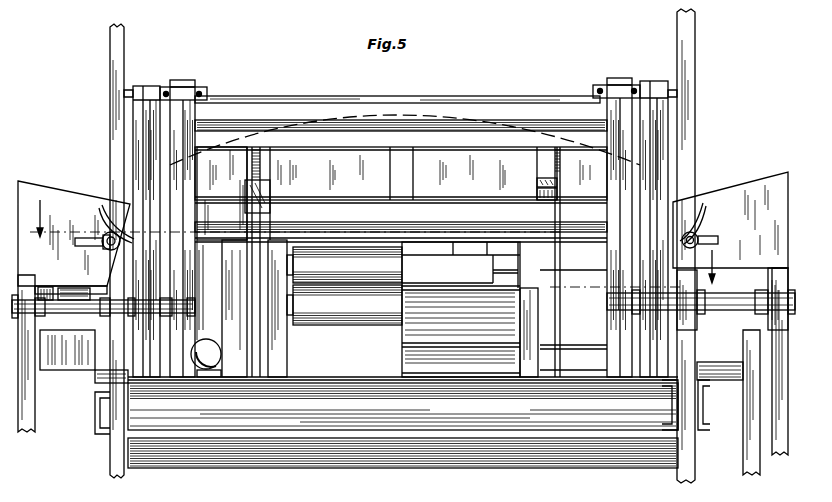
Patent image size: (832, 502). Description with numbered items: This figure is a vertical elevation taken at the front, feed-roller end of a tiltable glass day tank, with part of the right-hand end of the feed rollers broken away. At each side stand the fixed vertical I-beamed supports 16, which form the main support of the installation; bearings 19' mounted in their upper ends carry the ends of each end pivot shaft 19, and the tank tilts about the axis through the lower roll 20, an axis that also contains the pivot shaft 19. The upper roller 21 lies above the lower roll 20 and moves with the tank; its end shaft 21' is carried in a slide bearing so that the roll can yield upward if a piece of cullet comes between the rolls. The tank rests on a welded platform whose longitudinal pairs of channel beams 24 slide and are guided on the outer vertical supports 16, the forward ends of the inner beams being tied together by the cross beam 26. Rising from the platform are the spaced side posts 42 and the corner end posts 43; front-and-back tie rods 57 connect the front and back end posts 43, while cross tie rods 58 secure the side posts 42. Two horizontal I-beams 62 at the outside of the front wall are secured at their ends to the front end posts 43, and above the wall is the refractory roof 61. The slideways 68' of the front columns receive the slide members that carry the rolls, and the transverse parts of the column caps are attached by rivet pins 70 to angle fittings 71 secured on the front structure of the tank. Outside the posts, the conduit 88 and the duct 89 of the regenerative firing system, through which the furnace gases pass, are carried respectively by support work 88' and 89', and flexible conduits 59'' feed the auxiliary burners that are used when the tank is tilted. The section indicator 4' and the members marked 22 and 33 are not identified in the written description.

The section line indicator 4' is at (376, 238).
The vertical fixed I-beamed supports 16 is at (35, 423).
The end pivot shaft 19 is at (701, 292).
The bearings 19' is at (71, 311).
The lower roll 20 is at (344, 305).
The upper roller 21 is at (344, 265).
The end shaft of top roll 21' is at (103, 322).
The base beam 22 is at (355, 465).
The channel beams 24 is at (128, 408).
The cross beam 26 is at (367, 423).
The post 33 is at (112, 52).
The posts 42 is at (148, 86).
The end posts 43 is at (188, 80).
The tie rods 57 is at (208, 90).
The cross tie rods 58 is at (283, 100).
The flexible conduits 59'' is at (175, 262).
The refractory roof 61 is at (77, 247).
The horizontally extending I-beams 62 is at (480, 128).
The slideways 68' is at (532, 177).
The rivet pins 70 is at (536, 193).
The angle fittings 71 is at (537, 165).
The conduit 88 is at (74, 220).
The support work 88' is at (67, 358).
The ducts 89 is at (730, 212).
The support work 89' is at (722, 353).